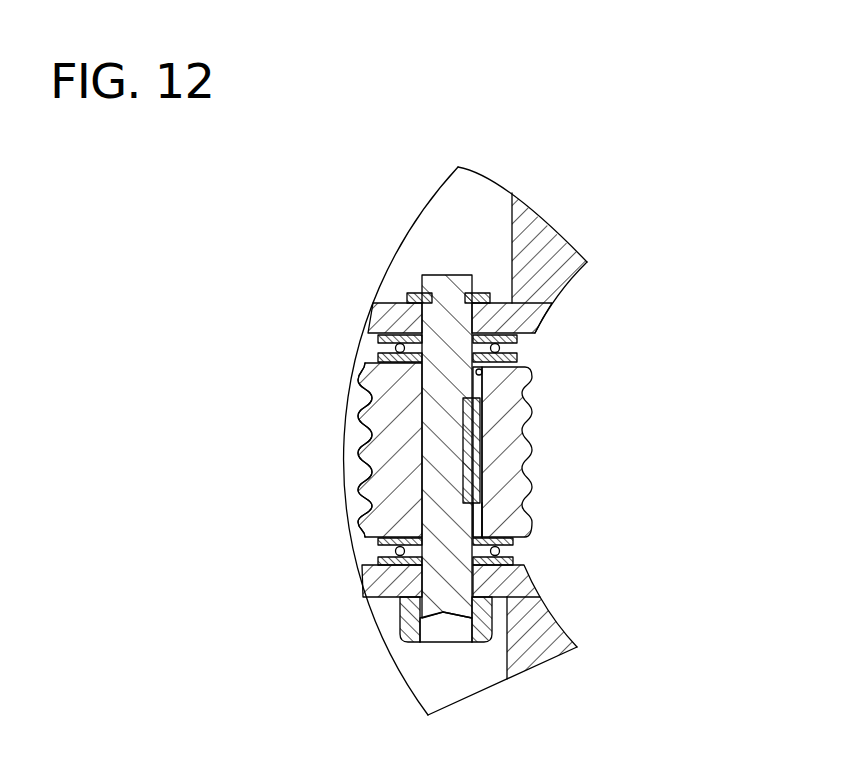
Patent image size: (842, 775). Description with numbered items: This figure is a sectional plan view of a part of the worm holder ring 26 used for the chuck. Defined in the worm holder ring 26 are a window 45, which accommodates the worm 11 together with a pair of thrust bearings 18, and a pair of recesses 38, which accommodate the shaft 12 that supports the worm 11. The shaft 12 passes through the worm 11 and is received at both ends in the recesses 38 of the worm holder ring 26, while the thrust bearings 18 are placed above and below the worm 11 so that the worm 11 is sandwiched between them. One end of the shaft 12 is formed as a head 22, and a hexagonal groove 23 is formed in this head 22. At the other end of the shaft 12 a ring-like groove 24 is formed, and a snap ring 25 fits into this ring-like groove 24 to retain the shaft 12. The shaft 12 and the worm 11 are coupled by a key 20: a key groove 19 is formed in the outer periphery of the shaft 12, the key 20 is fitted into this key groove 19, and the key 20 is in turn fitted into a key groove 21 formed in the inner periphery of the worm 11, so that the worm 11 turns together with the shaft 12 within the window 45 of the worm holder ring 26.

The worm 11 is at (535, 418).
The shaft 12 is at (457, 275).
The thrust bearings 18 is at (378, 339).
The key groove 19 is at (477, 496).
The key 20 is at (480, 455).
The key groove 21 is at (483, 372).
The head 22 is at (398, 632).
The hexagonal groove 23 is at (420, 628).
The ring-like groove 24 is at (417, 293).
The snap ring 25 is at (487, 293).
The worm holder ring 26 is at (567, 283).
The recesses 38 is at (493, 210).
The window 45 is at (347, 436).